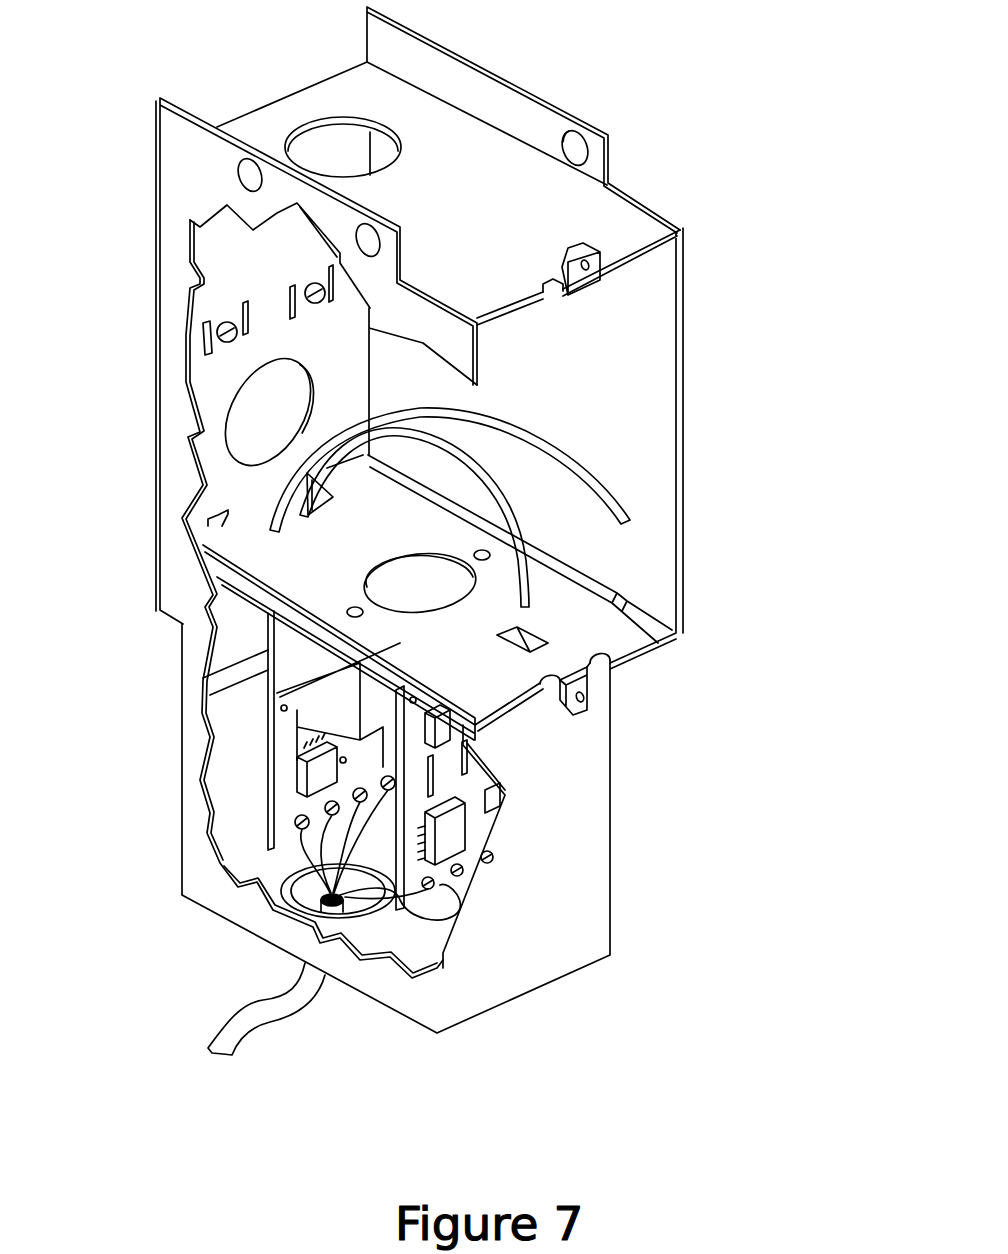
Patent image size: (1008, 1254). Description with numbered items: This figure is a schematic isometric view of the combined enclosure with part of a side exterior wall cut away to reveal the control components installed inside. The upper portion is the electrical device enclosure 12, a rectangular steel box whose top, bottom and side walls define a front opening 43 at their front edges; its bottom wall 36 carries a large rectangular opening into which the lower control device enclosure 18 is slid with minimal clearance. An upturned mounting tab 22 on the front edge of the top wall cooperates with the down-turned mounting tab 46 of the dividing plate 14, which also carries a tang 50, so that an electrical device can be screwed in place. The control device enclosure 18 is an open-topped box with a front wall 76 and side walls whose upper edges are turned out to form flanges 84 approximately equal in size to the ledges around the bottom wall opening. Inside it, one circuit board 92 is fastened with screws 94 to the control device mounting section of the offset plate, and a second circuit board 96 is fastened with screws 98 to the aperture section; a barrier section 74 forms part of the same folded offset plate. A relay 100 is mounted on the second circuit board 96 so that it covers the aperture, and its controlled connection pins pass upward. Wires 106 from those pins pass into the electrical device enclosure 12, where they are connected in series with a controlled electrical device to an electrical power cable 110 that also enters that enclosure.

The electrical device enclosure 12 is at (815, 413).
The dividing plate 14 is at (577, 683).
The control device enclosure 18 is at (767, 828).
The mounting tab 22 is at (595, 250).
The bottom wall 36 is at (657, 617).
The front opening 43 is at (610, 380).
The mounting tab 46 is at (598, 687).
The tang 50 is at (598, 657).
The barrier section 74 is at (237, 723).
The front wall 76 is at (557, 905).
The flanges 84 is at (603, 578).
The circuit board 92 is at (483, 828).
The screws 94 is at (543, 683).
The second circuit board 96 is at (287, 752).
The screws 98 is at (287, 748).
The relay 100 is at (300, 660).
The wires 106 is at (517, 517).
The electrical power cable 110 is at (257, 998).